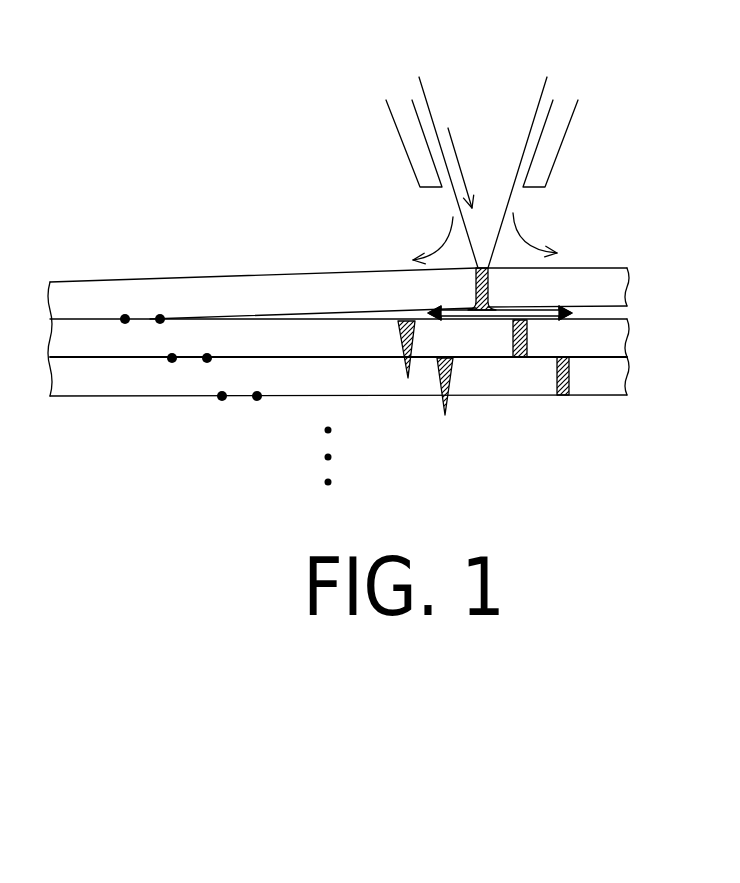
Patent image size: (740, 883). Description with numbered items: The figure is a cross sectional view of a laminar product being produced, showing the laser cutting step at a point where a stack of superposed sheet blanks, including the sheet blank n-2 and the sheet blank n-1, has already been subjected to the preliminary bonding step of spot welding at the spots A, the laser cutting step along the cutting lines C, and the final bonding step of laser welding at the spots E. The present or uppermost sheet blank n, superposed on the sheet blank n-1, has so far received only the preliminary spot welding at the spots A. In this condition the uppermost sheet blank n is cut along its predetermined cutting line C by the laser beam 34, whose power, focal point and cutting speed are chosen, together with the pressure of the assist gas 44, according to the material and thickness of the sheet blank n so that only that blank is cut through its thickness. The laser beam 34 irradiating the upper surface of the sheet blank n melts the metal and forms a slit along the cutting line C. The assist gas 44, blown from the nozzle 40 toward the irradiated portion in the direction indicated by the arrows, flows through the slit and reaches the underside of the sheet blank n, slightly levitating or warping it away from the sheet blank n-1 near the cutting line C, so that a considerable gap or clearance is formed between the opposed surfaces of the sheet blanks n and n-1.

The assist gas 44 is at (455, 150).
The laser beam 34 is at (507, 107).
The nozzle 40 is at (563, 147).
The cutting line C is at (489, 290).
The spots of laser welding E is at (400, 335).
The spots of spot welding A is at (141, 328).
The uppermost sheet blank n is at (363, 330).
The sheet blank n-1 is at (376, 339).
The sheet blank n-2 is at (377, 376).